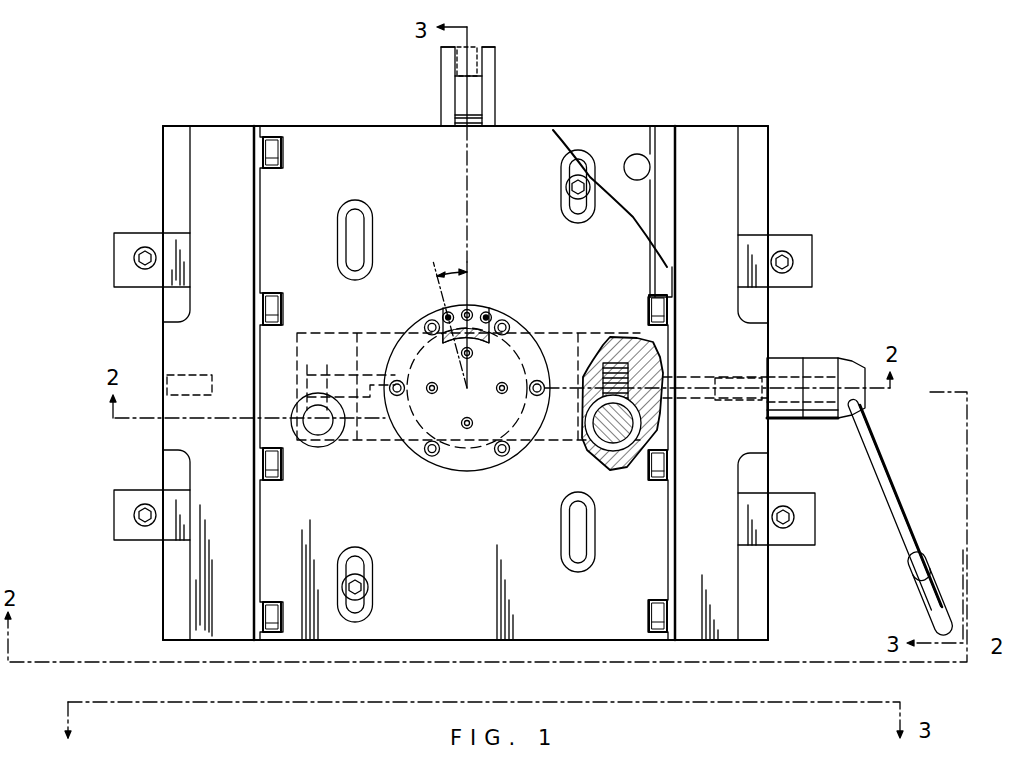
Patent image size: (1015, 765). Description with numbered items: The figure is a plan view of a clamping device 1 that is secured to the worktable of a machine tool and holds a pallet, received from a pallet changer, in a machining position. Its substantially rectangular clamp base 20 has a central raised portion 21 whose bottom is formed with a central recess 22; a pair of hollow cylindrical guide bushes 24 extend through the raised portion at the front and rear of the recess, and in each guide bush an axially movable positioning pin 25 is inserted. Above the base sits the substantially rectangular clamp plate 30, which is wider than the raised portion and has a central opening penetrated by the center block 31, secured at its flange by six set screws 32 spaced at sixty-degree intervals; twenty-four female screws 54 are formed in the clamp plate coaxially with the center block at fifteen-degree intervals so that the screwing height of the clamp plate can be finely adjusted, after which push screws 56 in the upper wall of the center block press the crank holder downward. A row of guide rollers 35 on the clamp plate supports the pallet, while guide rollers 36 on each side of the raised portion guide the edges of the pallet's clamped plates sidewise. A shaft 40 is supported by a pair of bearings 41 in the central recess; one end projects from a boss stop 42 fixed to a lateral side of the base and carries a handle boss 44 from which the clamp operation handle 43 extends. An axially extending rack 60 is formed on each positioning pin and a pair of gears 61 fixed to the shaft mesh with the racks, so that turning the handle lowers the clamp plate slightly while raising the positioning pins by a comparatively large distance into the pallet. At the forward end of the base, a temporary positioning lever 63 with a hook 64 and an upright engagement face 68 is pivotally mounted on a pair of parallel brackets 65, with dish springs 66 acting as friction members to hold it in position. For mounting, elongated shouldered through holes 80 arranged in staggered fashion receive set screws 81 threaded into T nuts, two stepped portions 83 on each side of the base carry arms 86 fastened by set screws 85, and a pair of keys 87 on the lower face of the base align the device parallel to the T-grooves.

The clamping device 1 is at (772, 160).
The clamp base 20 is at (692, 127).
The raised portion 21 is at (653, 130).
The central recess 22 is at (402, 440).
The guide bush 24 is at (326, 446).
The positioning pin 25 is at (312, 446).
The clamp plate 30 is at (318, 126).
The center block 31 is at (488, 470).
The set screws 32 is at (426, 322).
The guide rollers 35 is at (271, 140).
The guide rollers 36 is at (650, 172).
The shaft 40 is at (823, 372).
The bearings 41 is at (357, 333).
The boss stop 42 is at (792, 420).
The clamp operation handle 43 is at (900, 518).
The handle boss 44 is at (855, 363).
The female screws 54 is at (446, 312).
The push screws 56 is at (473, 353).
The rack 60 is at (318, 393).
The gears 61 is at (307, 375).
The temporary positioning lever 63 is at (472, 101).
The hook 64 is at (457, 116).
The brackets 65 is at (447, 92).
The dish spring 66 is at (443, 50).
The engagement face 68 is at (455, 78).
The through holes 80 is at (360, 225).
The set screws 81 is at (592, 180).
The stepped portions 83 is at (172, 166).
The set screws 85 is at (146, 247).
The arms 86 is at (114, 250).
The keys 87 is at (182, 375).